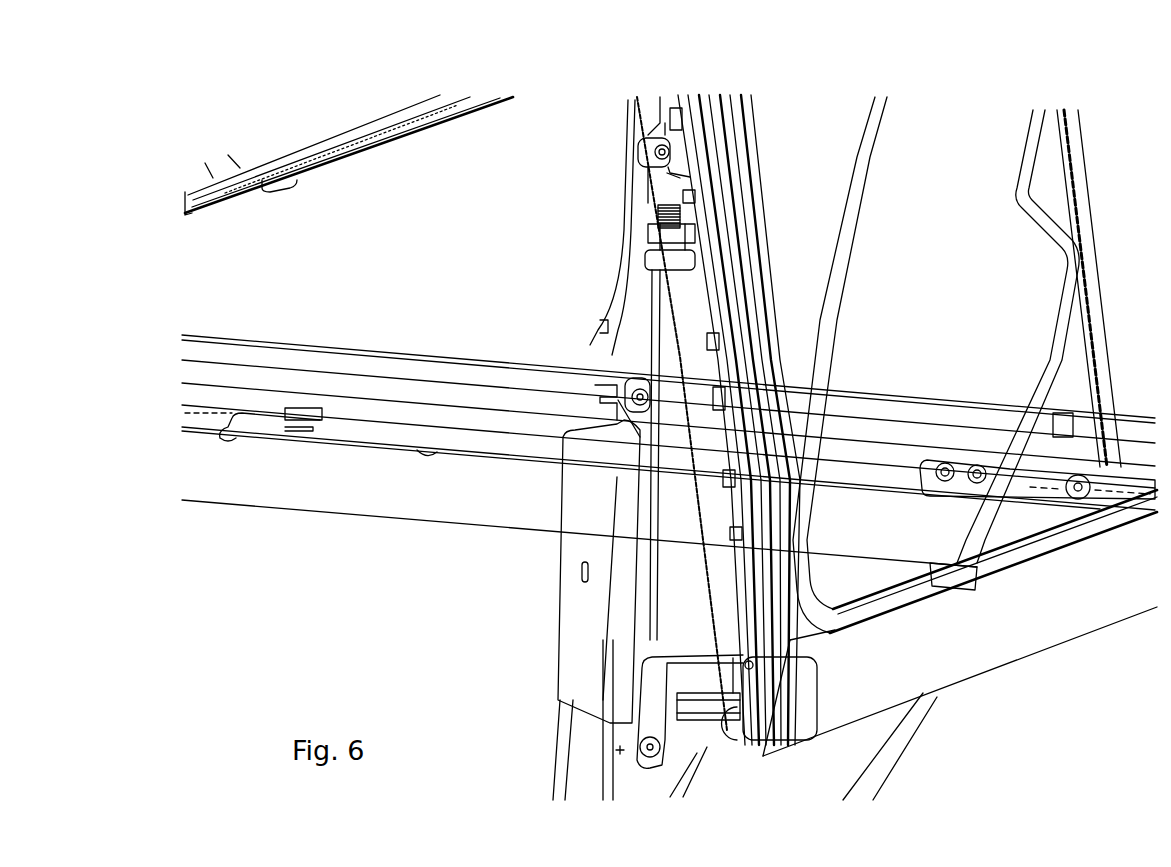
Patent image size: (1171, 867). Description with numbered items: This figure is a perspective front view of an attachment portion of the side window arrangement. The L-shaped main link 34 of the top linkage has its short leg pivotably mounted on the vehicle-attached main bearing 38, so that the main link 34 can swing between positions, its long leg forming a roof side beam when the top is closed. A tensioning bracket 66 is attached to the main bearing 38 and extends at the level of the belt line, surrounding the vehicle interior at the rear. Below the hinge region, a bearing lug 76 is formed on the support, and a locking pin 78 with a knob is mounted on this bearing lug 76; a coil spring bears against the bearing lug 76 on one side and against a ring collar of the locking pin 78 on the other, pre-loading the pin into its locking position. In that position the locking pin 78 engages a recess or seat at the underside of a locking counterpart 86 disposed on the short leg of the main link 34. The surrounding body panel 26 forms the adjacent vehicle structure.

The door panel 26 is at (1008, 623).
The main link 34 is at (635, 217).
The main bearing 38 is at (578, 604).
The tensioning bracket 66 is at (690, 681).
The bearing lug 76 is at (647, 230).
The locking pin 78 is at (647, 260).
The locking counterpart 86 is at (645, 185).